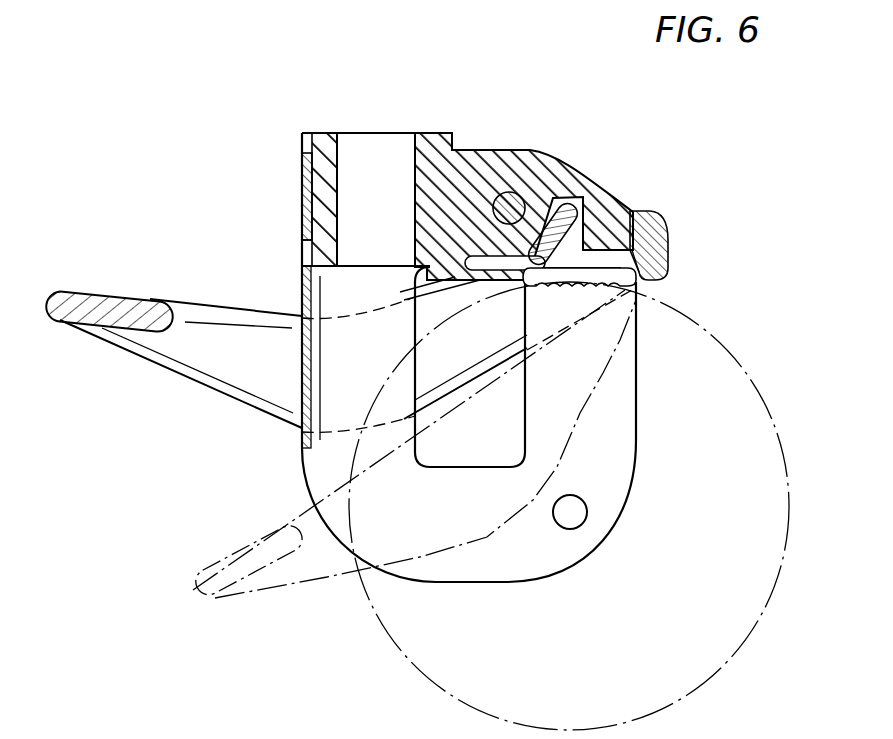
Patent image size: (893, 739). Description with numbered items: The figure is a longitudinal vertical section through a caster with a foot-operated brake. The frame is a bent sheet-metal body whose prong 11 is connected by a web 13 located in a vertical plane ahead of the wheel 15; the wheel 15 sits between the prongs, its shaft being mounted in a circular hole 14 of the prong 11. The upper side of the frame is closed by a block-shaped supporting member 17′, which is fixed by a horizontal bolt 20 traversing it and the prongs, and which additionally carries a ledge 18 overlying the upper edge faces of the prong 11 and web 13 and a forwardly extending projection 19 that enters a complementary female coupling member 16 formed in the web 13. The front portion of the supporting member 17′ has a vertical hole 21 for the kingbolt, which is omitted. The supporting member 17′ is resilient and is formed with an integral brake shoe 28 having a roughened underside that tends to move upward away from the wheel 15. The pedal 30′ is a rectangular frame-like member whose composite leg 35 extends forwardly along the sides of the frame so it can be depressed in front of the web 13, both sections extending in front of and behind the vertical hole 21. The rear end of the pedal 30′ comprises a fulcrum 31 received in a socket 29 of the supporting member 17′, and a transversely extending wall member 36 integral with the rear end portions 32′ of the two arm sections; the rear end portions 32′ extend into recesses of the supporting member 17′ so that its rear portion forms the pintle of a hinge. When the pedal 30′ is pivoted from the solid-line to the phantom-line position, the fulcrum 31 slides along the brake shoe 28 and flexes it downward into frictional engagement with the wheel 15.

The prong 11 is at (613, 457).
The web 13 is at (302, 296).
The circular hole 14 is at (576, 514).
The wheel 15 is at (378, 622).
The female coupling member 16 is at (302, 222).
The supporting member 17′ is at (462, 152).
The ledge 18 is at (302, 143).
The projection 19 is at (312, 258).
The bolt 20 is at (509, 192).
The vertical hole 21 is at (345, 191).
The brake shoe 28 is at (718, 338).
The socket 29 is at (572, 232).
The pedal 30′ is at (110, 292).
The fulcrum 31 is at (556, 200).
The rear end portion 32′ is at (630, 212).
The composite leg 35 is at (238, 378).
The wall member 36 is at (668, 248).